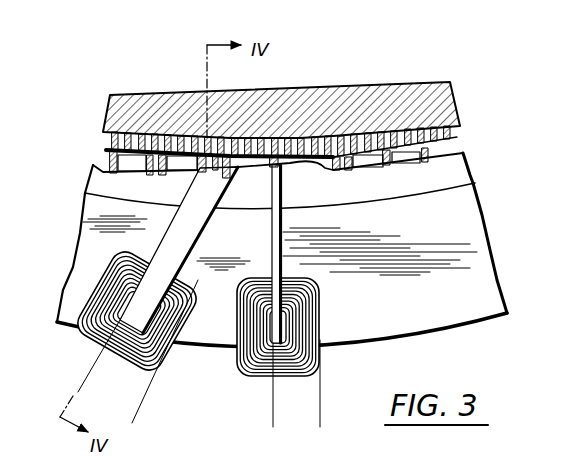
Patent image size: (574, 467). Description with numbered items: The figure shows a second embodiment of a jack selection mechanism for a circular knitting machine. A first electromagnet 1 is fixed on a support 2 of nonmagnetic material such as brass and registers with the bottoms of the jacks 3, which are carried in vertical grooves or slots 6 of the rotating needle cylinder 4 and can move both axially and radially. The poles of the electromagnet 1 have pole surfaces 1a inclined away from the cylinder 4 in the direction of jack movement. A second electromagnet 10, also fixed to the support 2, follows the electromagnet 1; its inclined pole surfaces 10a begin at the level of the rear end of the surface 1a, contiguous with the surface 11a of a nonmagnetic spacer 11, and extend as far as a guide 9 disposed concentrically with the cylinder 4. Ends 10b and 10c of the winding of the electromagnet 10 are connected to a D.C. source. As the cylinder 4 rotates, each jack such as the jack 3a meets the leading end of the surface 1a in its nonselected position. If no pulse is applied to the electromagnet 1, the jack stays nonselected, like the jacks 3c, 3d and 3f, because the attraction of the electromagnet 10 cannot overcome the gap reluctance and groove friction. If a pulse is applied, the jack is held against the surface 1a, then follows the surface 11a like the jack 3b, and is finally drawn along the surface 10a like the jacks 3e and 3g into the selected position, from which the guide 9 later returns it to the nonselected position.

The electromagnet 1 is at (257, 387).
The pole surface 1a is at (284, 171).
The support 2 is at (282, 265).
The jacks 3 is at (108, 160).
The jack 3a is at (275, 140).
The jack 3b is at (262, 142).
The jack 3c is at (249, 140).
The jack 3d is at (240, 140).
The jack 3e is at (226, 170).
The jack 3f is at (205, 174).
The jack 3g is at (163, 175).
The needle cylinder 4 is at (395, 104).
The grooves or slots 6 is at (110, 131).
The guide 9 is at (468, 171).
The second electromagnet 10 is at (70, 345).
The pole surface 10a is at (212, 182).
The winding end 10b is at (137, 418).
The winding end 10c is at (83, 388).
The spacer 11 is at (226, 203).
The surface 11a is at (256, 168).